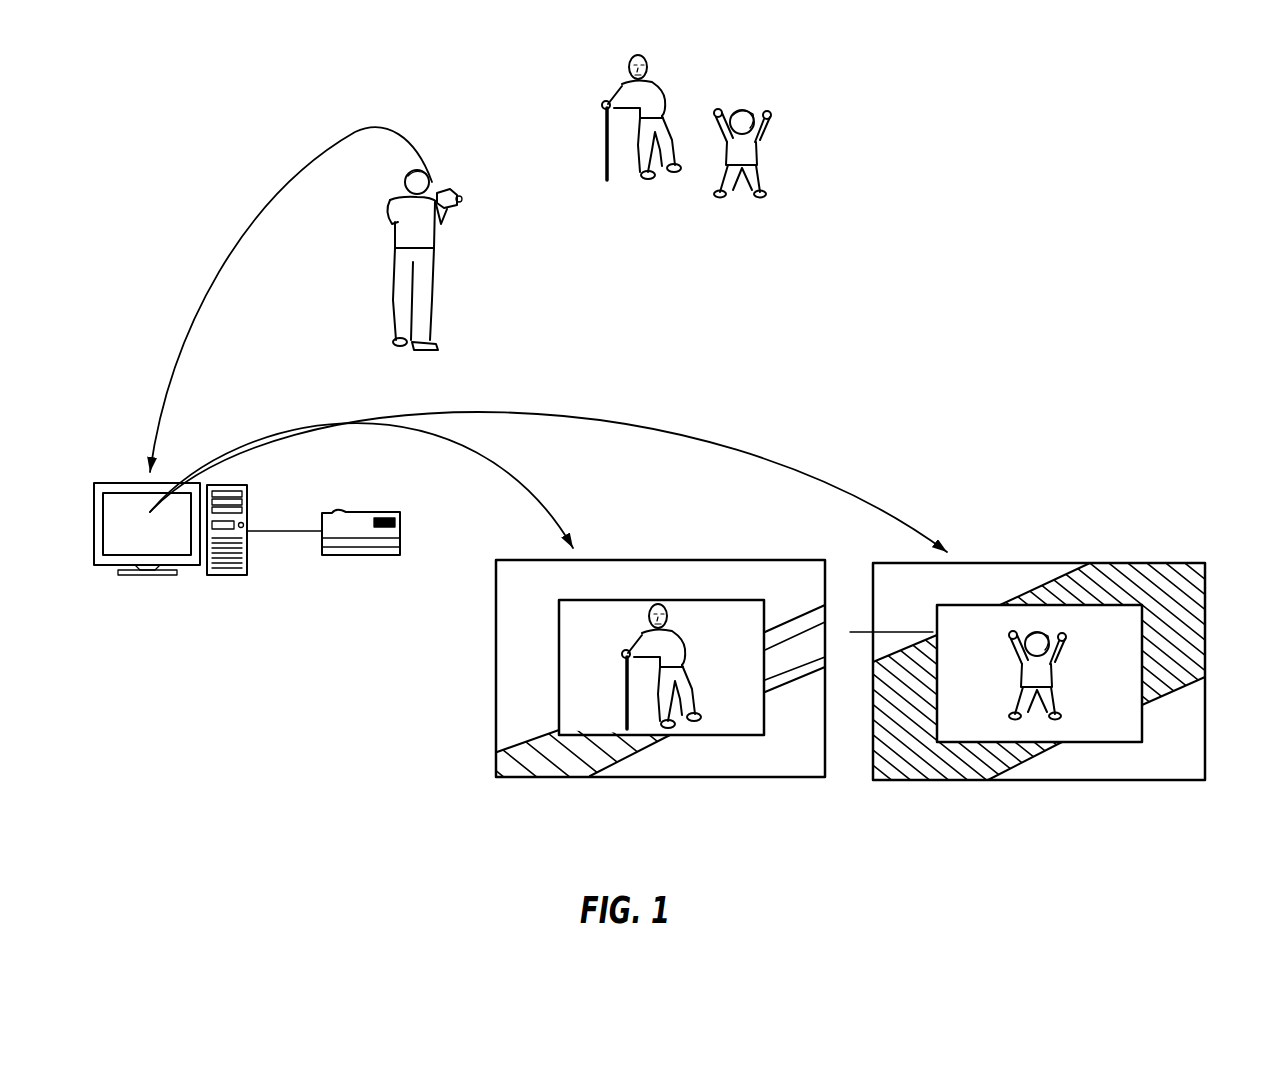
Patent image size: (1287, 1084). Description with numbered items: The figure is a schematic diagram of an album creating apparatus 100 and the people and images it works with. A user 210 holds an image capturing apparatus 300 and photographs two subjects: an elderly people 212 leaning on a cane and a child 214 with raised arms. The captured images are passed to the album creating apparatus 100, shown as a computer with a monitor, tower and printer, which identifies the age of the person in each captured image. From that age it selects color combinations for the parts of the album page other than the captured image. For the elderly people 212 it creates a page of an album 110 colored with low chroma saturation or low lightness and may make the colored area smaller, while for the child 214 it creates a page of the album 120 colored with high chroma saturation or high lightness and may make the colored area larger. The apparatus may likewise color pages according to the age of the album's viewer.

The album creating apparatus 100 is at (123, 482).
The album 110 is at (735, 778).
The album 120 is at (1110, 781).
The user 210 is at (436, 268).
The elderly people 212 is at (660, 73).
The child 214 is at (748, 108).
The image capturing apparatus 300 is at (452, 186).